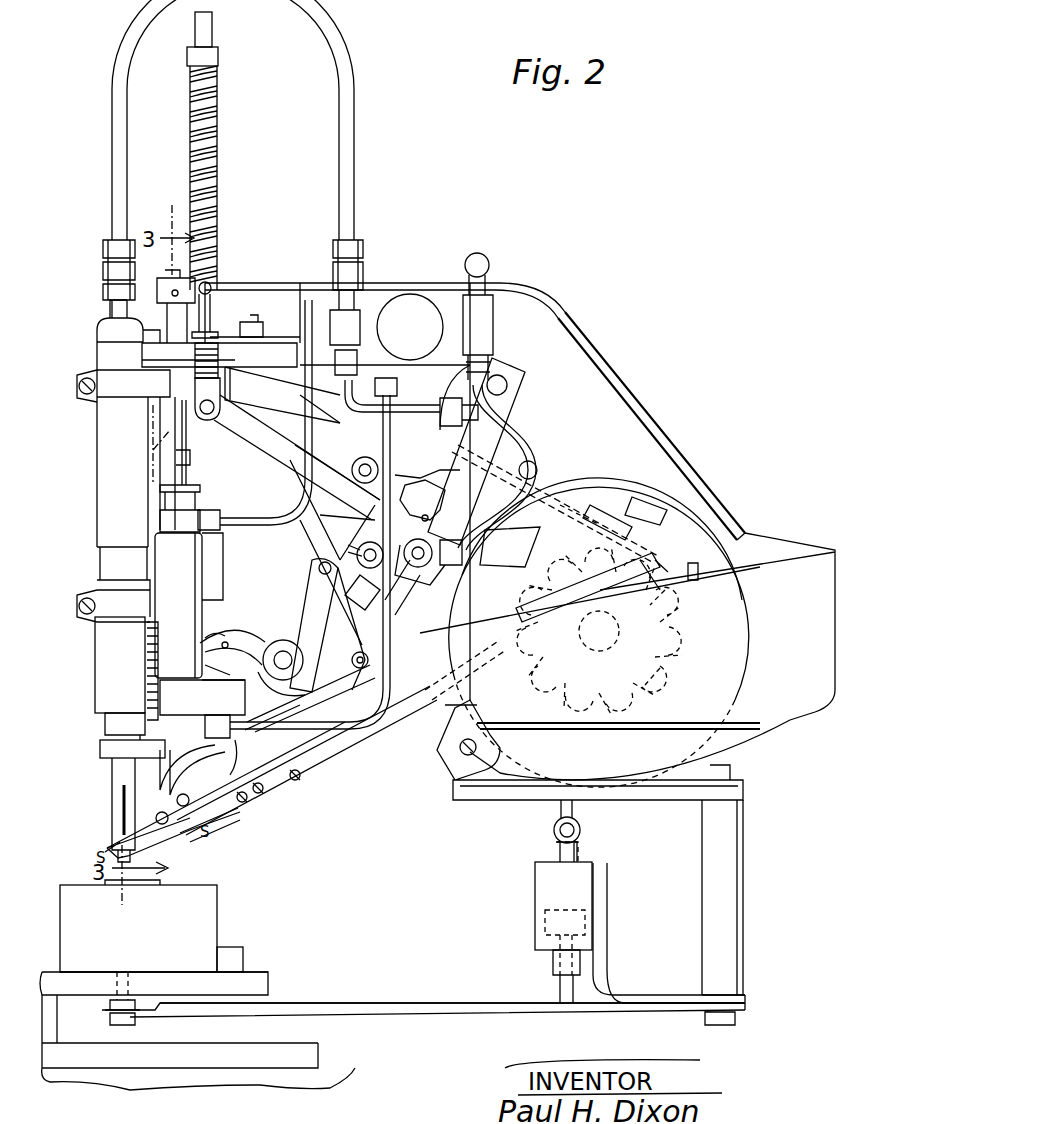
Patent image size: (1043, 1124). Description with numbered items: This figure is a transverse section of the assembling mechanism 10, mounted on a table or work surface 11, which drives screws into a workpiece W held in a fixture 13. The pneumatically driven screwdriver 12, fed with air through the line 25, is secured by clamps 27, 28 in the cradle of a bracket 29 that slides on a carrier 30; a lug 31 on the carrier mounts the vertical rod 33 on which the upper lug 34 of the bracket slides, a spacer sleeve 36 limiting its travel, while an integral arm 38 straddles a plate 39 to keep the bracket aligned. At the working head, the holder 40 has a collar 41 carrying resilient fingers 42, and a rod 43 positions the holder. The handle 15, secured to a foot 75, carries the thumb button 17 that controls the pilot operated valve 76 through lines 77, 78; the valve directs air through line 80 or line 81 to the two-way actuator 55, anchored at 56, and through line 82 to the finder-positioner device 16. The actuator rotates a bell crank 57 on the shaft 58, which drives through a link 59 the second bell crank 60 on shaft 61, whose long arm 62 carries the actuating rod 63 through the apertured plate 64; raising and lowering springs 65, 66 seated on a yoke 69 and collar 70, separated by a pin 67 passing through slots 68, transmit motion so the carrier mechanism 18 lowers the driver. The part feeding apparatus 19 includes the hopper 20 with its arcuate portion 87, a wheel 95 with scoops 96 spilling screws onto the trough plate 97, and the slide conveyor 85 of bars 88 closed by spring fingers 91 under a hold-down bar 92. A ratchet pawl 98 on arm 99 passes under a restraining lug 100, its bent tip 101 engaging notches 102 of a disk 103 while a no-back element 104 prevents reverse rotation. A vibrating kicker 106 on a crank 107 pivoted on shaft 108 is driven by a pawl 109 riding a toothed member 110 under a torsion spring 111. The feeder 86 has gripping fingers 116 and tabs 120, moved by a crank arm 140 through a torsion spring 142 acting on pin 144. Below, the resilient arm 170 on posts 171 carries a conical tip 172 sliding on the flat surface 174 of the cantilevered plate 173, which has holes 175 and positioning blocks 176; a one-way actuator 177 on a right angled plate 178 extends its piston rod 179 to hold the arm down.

The assembling mechanism 10 is at (289, 297).
The table or work surface 11 is at (262, 1090).
The power driven screwdriver 12 is at (88, 491).
The jig or fixture 13 is at (256, 933).
The handle 15 is at (140, 642).
The finder-positioner device 16 is at (482, 1023).
The thumb button 17 is at (195, 490).
The carrier mechanism 18 is at (230, 568).
The part feeding apparatus 19 is at (226, 843).
The hopper 20 is at (793, 555).
The air line 25 is at (360, 122).
The clamp 27 is at (72, 400).
The clamp 28 is at (78, 620).
The bracket 29 is at (152, 435).
The carrier 30 is at (605, 380).
The lug 31 is at (152, 290).
The vertical rod 33 is at (190, 465).
The upper lug 34 is at (158, 342).
The spacer sleeve 36 is at (219, 371).
The integral arm 38 is at (282, 393).
The plate 39 is at (278, 392).
The chuck or holder 40 is at (104, 796).
The collar 41 is at (102, 752).
The resilient fingers 42 is at (113, 815).
The rod 43 is at (160, 693).
The two-way pneumatic actuator 55 is at (530, 428).
The anchor 56 is at (506, 382).
The bell crank 57 is at (350, 680).
The shaft 58 is at (287, 655).
The link 59 is at (290, 560).
The second bell crank 60 is at (315, 515).
The shaft 61 is at (360, 462).
The long arm 62 is at (338, 497).
The actuating rod 63 is at (212, 38).
The apertured plate 64 is at (240, 330).
The raising spring 65 is at (218, 362).
The lowering spring 66 is at (218, 128).
The pin 67 is at (212, 285).
The slots 68 is at (208, 332).
The yoke 69 is at (218, 407).
The collar 70 is at (218, 60).
The foot 75 is at (212, 670).
The pilot operated valve 76 is at (450, 298).
The line 77 is at (308, 444).
The line 78 is at (345, 740).
The line 80 is at (428, 412).
The line 81 is at (520, 452).
The line 82 is at (554, 826).
The slide conveyor 85 is at (318, 770).
The feeder 86 is at (157, 838).
The arcuate portion 87 is at (655, 775).
The conveyor bars 88 is at (275, 783).
The spring fingers 91 is at (225, 812).
The hold-down bar 92 is at (300, 700).
The wheel 95 is at (622, 470).
The scoops 96 is at (693, 563).
The trough plate 97 is at (604, 588).
The ratchet pawl 98 is at (575, 502).
The arm 99 is at (545, 503).
The restraining lug 100 is at (537, 470).
The bent tip 101 is at (650, 555).
The peripheral notches 102 is at (680, 603).
The disk 103 is at (683, 655).
The no-back element 104 is at (390, 590).
The vibrating kicker 106 is at (452, 640).
The crank 107 is at (437, 530).
The shaft 108 is at (345, 544).
The pawl 109 is at (430, 492).
The toothed member 110 is at (440, 474).
The torsion spring 111 is at (372, 542).
The gripping fingers 116 is at (118, 840).
The tabs 120 is at (200, 790).
The crank arm 140 is at (210, 648).
The torsion spring 142 is at (268, 630).
The pin 144 is at (222, 636).
The resilient arm 170 is at (412, 1010).
The posts 171 is at (740, 856).
The conical tip 172 is at (115, 1005).
The cantilevered plate 173 is at (268, 986).
The flat surface 174 is at (262, 1000).
The circular holes 175 is at (123, 970).
The positioning blocks 176 is at (245, 960).
The one-way pneumatic actuator 177 is at (540, 890).
The right angled plate 178 is at (610, 933).
The piston rod 179 is at (560, 990).
The workpiece W is at (228, 905).